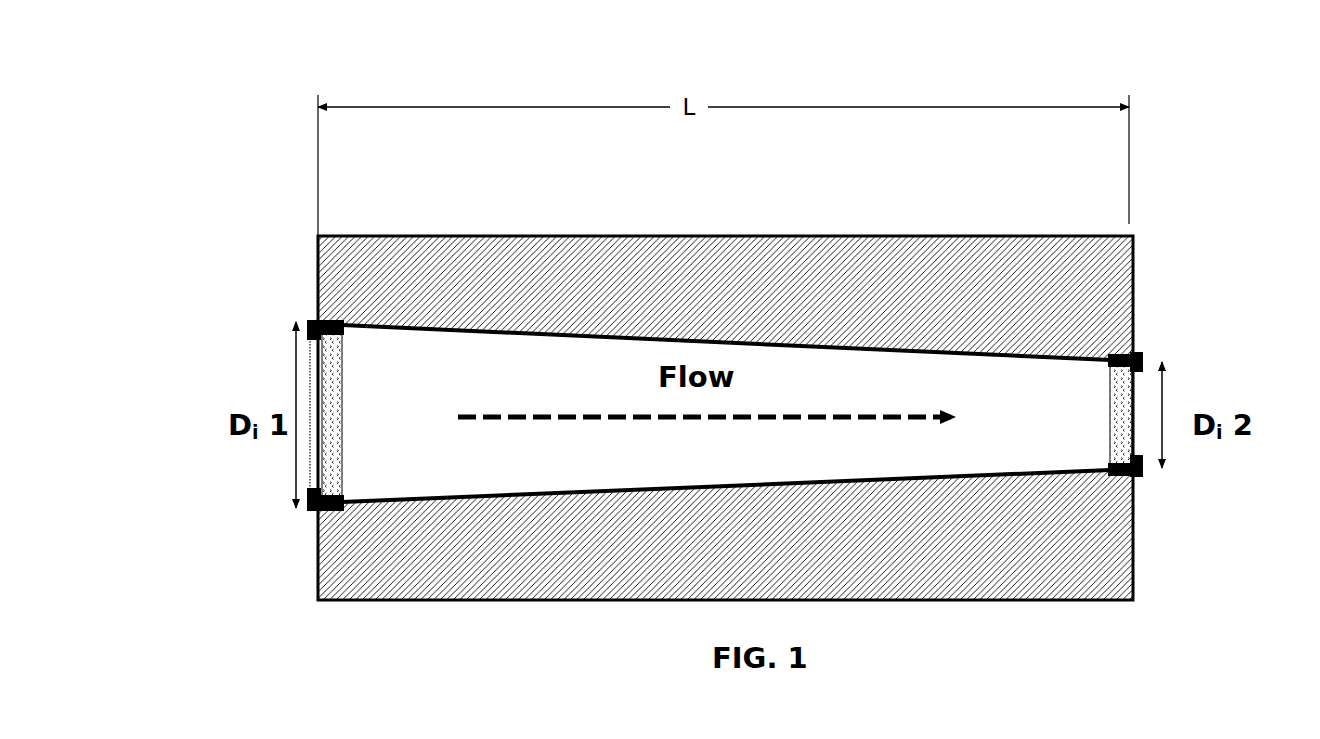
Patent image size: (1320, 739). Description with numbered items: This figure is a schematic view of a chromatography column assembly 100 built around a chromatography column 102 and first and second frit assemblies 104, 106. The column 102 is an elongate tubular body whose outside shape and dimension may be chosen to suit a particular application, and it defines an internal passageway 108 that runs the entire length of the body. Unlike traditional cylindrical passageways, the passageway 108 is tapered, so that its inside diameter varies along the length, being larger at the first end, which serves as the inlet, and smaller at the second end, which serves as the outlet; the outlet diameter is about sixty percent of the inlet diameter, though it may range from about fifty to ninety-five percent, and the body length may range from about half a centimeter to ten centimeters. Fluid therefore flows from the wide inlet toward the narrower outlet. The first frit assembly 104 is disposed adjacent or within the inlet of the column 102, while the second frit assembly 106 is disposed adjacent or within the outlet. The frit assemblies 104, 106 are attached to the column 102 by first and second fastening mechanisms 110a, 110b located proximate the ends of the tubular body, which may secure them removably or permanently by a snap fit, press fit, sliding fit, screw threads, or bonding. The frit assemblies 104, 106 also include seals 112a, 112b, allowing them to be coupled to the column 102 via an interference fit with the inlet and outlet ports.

The chromatography column assembly 100 is at (213, 113).
The chromatography column 102 is at (488, 236).
The first frit assembly 104 is at (312, 398).
The second frit assembly 106 is at (1130, 406).
The internal passageway 108 is at (912, 386).
The first fastening mechanism 110a is at (308, 317).
The second fastening mechanism 110b is at (1141, 349).
The seal 112a is at (333, 321).
The seal 112b is at (1119, 352).